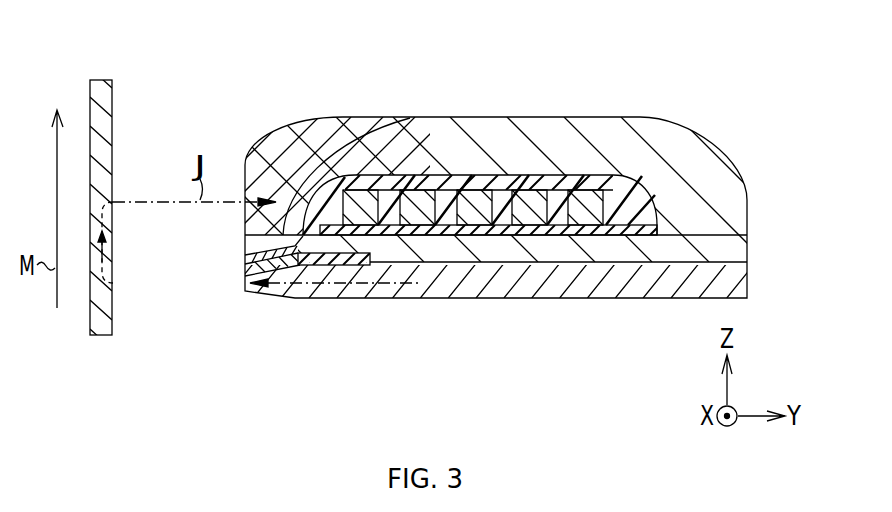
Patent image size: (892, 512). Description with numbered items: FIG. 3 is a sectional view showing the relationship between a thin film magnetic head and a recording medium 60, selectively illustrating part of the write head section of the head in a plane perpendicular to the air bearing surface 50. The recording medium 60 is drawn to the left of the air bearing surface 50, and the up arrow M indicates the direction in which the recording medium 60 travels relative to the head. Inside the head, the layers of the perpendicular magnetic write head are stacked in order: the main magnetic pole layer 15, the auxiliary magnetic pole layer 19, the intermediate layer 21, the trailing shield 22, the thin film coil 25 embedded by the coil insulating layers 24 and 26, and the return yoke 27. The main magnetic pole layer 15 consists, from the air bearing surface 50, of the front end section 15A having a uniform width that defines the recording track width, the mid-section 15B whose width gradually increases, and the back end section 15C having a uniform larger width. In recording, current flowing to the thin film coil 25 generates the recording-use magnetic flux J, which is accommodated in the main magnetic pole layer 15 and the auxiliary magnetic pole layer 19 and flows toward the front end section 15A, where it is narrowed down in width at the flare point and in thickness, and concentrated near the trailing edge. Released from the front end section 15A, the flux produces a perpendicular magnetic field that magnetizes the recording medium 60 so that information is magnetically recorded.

The main magnetic pole layer 15 is at (348, 46).
The front end section 15A is at (343, 180).
The mid-section 15B is at (396, 215).
The back end section 15C is at (418, 234).
The auxiliary magnetic pole layer 19 is at (558, 235).
The intermediate layer 21 is at (267, 235).
The trailing shield 22 is at (253, 235).
The coil insulating layer 24 is at (592, 232).
The thin film coil 25 is at (527, 195).
The coil insulating layer 26 is at (624, 215).
The return yoke 27 is at (693, 148).
The air bearing surface 50 is at (233, 257).
The recording medium 60 is at (102, 335).